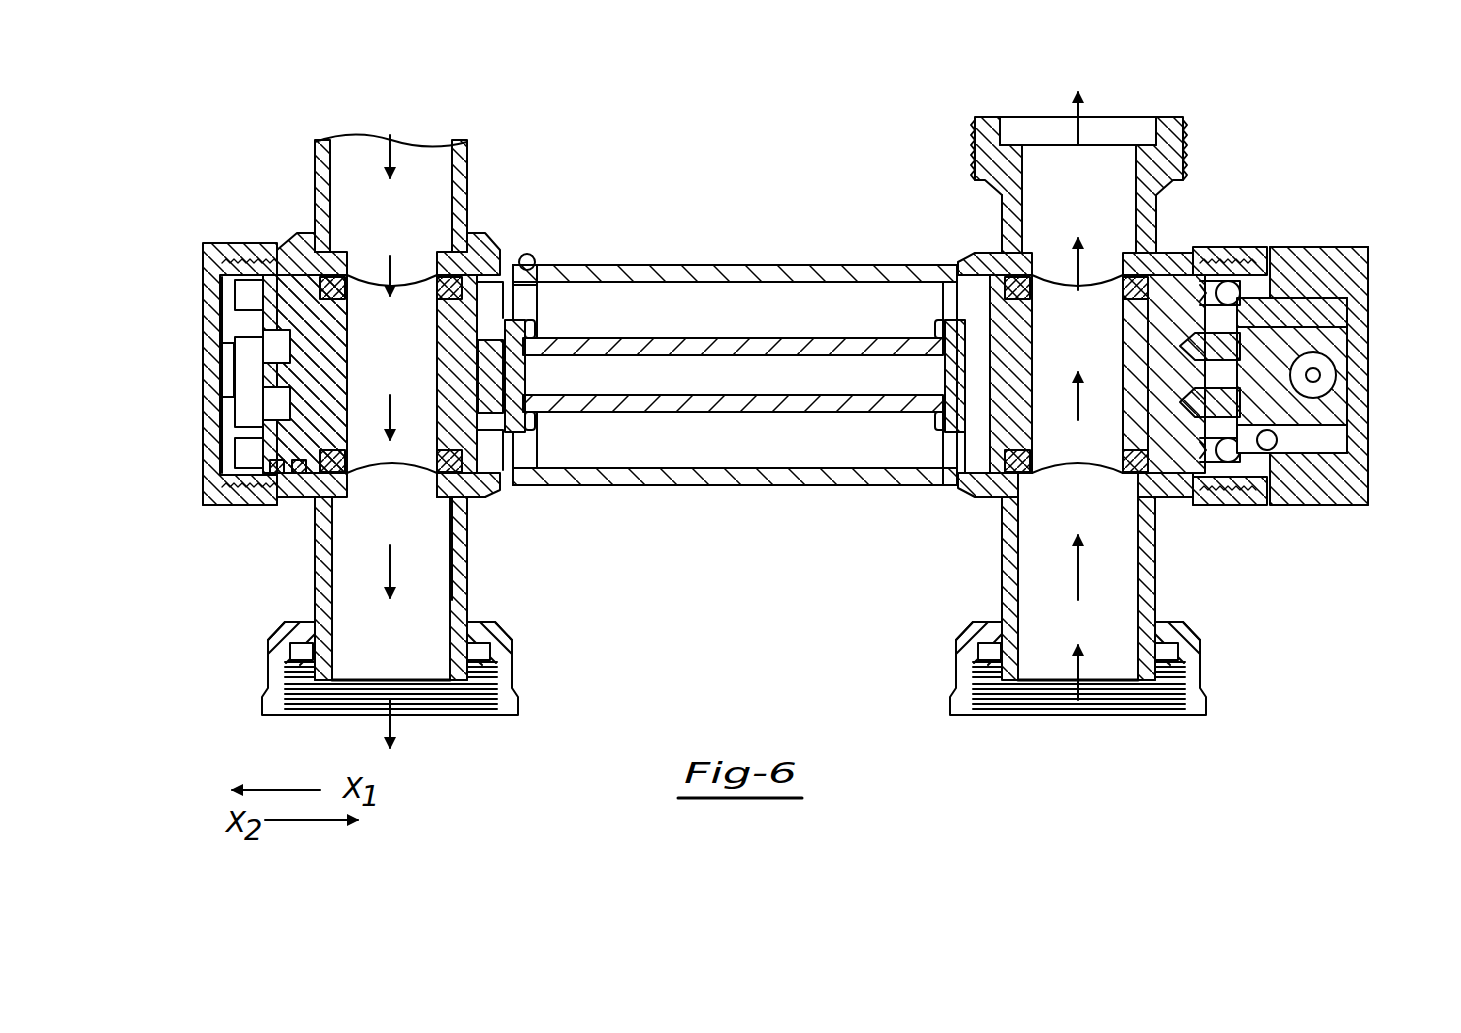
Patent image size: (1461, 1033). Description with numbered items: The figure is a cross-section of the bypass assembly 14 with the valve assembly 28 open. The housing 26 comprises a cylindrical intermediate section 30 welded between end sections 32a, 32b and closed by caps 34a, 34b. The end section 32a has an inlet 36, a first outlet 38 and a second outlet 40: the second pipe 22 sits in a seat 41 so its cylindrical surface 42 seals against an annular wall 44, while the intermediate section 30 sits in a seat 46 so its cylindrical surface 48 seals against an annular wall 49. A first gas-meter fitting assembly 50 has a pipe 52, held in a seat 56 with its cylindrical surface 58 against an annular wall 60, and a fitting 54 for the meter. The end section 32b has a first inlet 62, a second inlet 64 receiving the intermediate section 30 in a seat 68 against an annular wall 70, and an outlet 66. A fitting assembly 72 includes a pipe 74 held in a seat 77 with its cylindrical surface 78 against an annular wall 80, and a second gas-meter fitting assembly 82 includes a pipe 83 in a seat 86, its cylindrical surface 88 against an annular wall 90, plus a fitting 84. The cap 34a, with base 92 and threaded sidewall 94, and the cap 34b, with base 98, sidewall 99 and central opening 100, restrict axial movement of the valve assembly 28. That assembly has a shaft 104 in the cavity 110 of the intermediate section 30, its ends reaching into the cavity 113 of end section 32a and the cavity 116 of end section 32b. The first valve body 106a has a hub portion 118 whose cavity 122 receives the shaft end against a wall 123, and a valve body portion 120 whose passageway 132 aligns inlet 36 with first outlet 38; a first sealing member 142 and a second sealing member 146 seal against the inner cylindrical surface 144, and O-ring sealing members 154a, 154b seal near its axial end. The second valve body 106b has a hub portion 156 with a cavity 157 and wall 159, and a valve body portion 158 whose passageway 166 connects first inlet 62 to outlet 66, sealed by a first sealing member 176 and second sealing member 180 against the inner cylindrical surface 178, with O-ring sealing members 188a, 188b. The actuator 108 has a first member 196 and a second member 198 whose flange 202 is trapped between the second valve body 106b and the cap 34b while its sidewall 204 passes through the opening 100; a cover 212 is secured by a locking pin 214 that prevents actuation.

The bypass assembly 14 is at (790, 210).
The second pipe 22 is at (470, 140).
The housing 26 is at (713, 262).
The valve assembly 28 is at (490, 290).
The intermediate section 30 is at (684, 270).
The end section 32a is at (305, 240).
The end section 32b is at (1160, 260).
The cap 34a is at (215, 250).
The cap 34b is at (1212, 247).
The inlet 36 is at (347, 270).
The first outlet 38 is at (354, 500).
The second outlet 40 is at (518, 308).
The seat 41 is at (454, 238).
The cylindrical surface 42 is at (468, 180).
The annular wall 44 is at (335, 245).
The seat 46 is at (508, 495).
The cylindrical surface 48 is at (718, 490).
The annular wall 49 is at (530, 264).
The first gas-meter fitting assembly 50 is at (305, 597).
The pipe 52 is at (475, 606).
The fitting 54 is at (500, 667).
The seat 56 is at (346, 465).
The cylindrical surface 58 is at (470, 595).
The annular wall 60 is at (460, 500).
The first inlet 62 is at (1040, 497).
The second inlet 64 is at (960, 283).
The outlet 66 is at (1036, 265).
The seat 68 is at (945, 473).
The annular wall 70 is at (935, 280).
The fitting assembly 72 is at (1190, 120).
The pipe 74 is at (987, 185).
The seat 77 is at (1136, 236).
The cylindrical surface 78 is at (1000, 225).
The annular wall 80 is at (1004, 243).
The second gas-meter fitting assembly 82 is at (1178, 590).
The pipe 83 is at (1155, 582).
The fitting 84 is at (1190, 670).
The seat 86 is at (1145, 527).
The cylindrical surface 88 is at (1002, 615).
The annular wall 90 is at (1010, 505).
The base 92 is at (220, 342).
The sidewall 94 is at (212, 505).
The base 98 is at (1285, 267).
The sidewall 99 is at (1265, 270).
The opening 100 is at (1340, 473).
The shaft 104 is at (760, 417).
The first valve body 106a is at (277, 317).
The second valve body 106b is at (1205, 265).
The actuator 108 is at (1310, 302).
The cavity 110 is at (652, 293).
The cavity 113 is at (560, 460).
The cavity 116 is at (970, 472).
The hub portion 118 is at (534, 420).
The valve body portion 120 is at (230, 405).
The cavity 122 is at (530, 363).
The wall 123 is at (525, 370).
The passageway 132 is at (345, 340).
The first sealing member 142 is at (465, 276).
The inner cylindrical surface 144 is at (305, 374).
The second sealing member 146 is at (442, 487).
The sealing member 154a is at (290, 480).
The sealing member 154b is at (310, 485).
The hub portion 156 is at (930, 352).
The cavity 157 is at (925, 410).
The valve body portion 158 is at (1218, 502).
The wall 159 is at (940, 400).
The passageway 166 is at (1038, 369).
The first sealing member 176 is at (1020, 295).
The inner cylindrical surface 178 is at (1190, 373).
The second sealing member 180 is at (1044, 455).
The sealing member 188a is at (1205, 405).
The sealing member 188b is at (1202, 450).
The first member 196 is at (1338, 348).
The second member 198 is at (1349, 311).
The flange 202 is at (1275, 272).
The sidewall 204 is at (1292, 376).
The cover 212 is at (1355, 447).
The locking pin 214 is at (1330, 380).